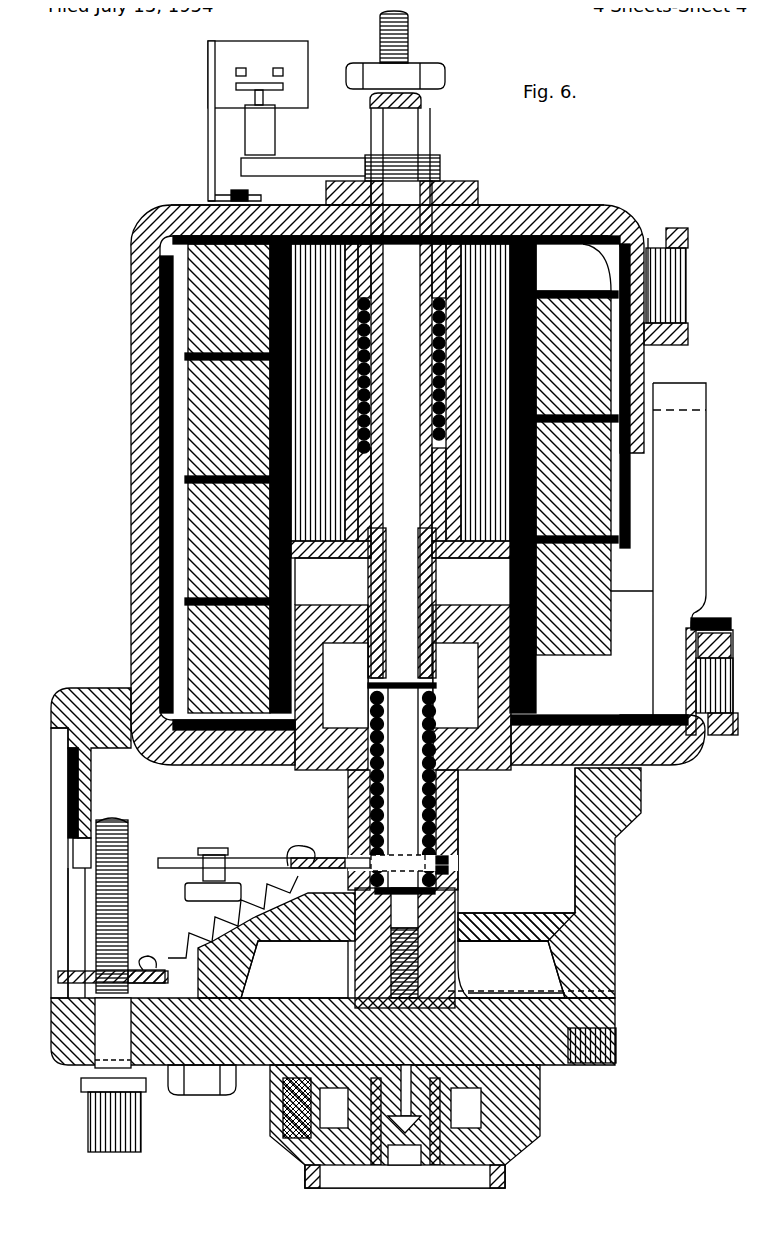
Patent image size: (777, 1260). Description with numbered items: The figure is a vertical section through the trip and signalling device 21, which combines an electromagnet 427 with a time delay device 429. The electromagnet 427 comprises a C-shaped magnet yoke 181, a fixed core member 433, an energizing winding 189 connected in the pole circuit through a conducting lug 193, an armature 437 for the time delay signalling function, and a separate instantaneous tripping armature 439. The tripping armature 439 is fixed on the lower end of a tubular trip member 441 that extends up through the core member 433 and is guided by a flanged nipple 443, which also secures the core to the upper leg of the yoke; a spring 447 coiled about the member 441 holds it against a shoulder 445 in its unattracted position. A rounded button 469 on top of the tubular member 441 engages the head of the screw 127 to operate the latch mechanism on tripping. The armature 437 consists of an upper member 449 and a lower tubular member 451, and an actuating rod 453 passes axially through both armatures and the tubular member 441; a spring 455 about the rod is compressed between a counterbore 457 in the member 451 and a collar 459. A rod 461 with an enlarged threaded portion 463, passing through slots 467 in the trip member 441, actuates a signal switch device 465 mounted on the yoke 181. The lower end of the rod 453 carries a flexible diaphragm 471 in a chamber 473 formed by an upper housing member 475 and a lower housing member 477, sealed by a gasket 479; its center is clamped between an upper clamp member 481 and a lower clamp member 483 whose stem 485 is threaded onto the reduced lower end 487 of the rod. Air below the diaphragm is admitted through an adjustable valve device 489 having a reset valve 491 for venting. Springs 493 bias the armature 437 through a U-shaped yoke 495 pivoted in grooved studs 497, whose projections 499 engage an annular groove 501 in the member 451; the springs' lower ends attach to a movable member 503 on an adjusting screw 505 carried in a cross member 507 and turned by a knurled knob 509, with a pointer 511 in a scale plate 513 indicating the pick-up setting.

The trip and signalling device 21 is at (408, 477).
The headed screw 127 is at (396, 40).
The C-shaped magnet yoke 181 is at (140, 313).
The energizing winding 189 is at (160, 412).
The conducting lug 193 is at (665, 540).
The electromagnet 427 is at (408, 477).
The time delay device 429 is at (342, 920).
The fixed core member 433 is at (487, 205).
The armature 437 is at (401, 707).
The instantaneous tripping armature 439 is at (437, 612).
The tubular trip member 441 is at (365, 563).
The flanged nipple 443 is at (455, 178).
The shoulder 445 is at (330, 468).
The spring 447 is at (440, 372).
The upper member 449 is at (306, 612).
The lower tubular member 451 is at (442, 814).
The actuating rod 453 is at (403, 656).
The spring 455 is at (352, 780).
The counterbore 457 is at (435, 738).
The collar 459 is at (362, 684).
The rod 461 is at (333, 158).
The enlarged threaded portion 463 is at (422, 160).
The signal switch device 465 is at (225, 73).
The slots 467 is at (405, 118).
The rounded button 469 is at (365, 88).
The flexible diaphragm 471 is at (248, 1008).
The chamber 473 is at (565, 953).
The upper housing member 475 is at (598, 862).
The lower housing member 477 is at (597, 1030).
The sealing gasket 479 is at (606, 984).
The upper clamp member 481 is at (445, 980).
The lower clamp member 483 is at (470, 990).
The stem 485 is at (380, 970).
The reduced lower end 487 is at (392, 948).
The adjustable valve device 489 is at (425, 1126).
The reset valve 491 is at (392, 1160).
The springs 493 is at (200, 912).
The U-shaped yoke 495 is at (338, 858).
The grooved studs 497 is at (202, 840).
The projections 499 is at (446, 850).
The annular groove 501 is at (442, 858).
The movable member 503 is at (150, 962).
The adjusting screw 505 is at (118, 862).
The cross member 507 is at (55, 1045).
The knurled knob 509 is at (95, 1112).
The pointer 511 is at (70, 970).
The scale plate 513 is at (65, 836).